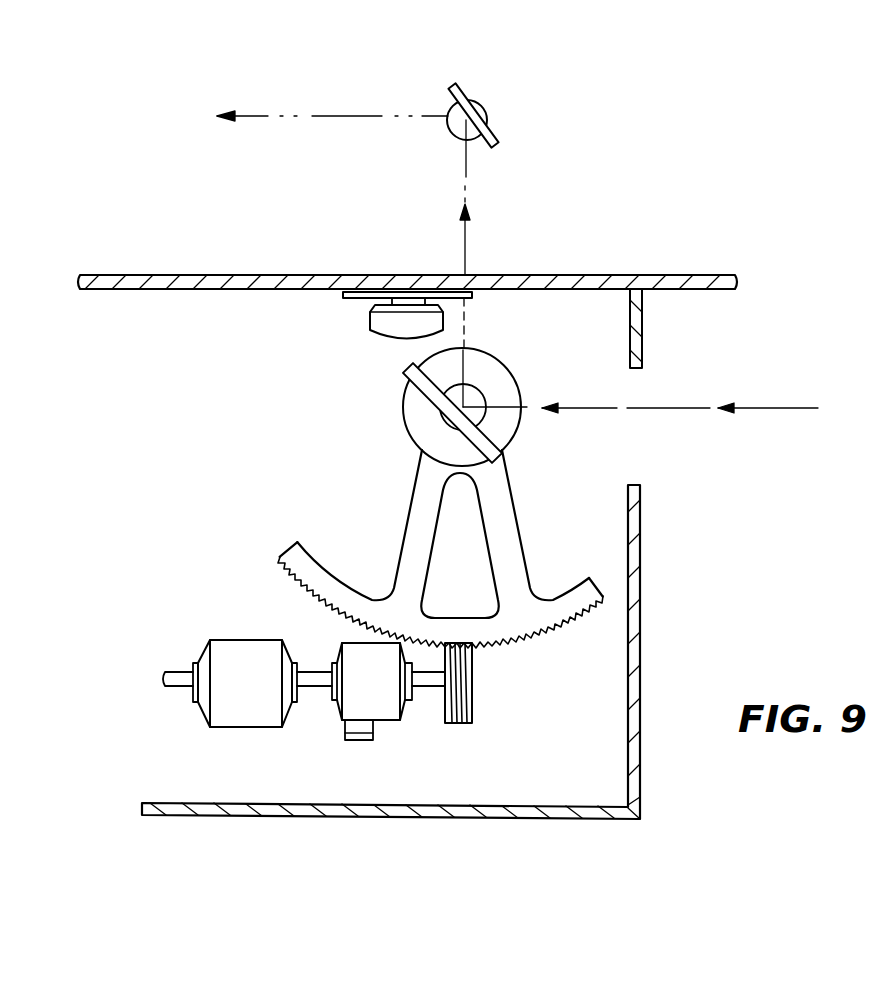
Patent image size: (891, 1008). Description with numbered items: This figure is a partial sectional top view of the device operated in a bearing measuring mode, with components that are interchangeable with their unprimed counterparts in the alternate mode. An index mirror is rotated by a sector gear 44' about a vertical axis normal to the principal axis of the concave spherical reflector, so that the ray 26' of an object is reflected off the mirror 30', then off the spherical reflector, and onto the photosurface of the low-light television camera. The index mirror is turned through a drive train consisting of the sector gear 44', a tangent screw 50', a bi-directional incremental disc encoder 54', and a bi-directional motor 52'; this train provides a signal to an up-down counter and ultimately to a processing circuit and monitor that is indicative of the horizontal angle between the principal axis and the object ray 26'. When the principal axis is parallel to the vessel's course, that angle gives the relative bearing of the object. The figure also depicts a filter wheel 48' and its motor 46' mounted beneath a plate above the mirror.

The ray 26' is at (518, 262).
The mirror 30' is at (526, 268).
The sector gear 44' is at (508, 549).
The motor 46' is at (372, 347).
The filter wheel 48' is at (324, 314).
The tangent screw 50' is at (520, 683).
The bi-directional motor 52' is at (228, 660).
The bi-directional incremental disc encoder 54' is at (452, 721).